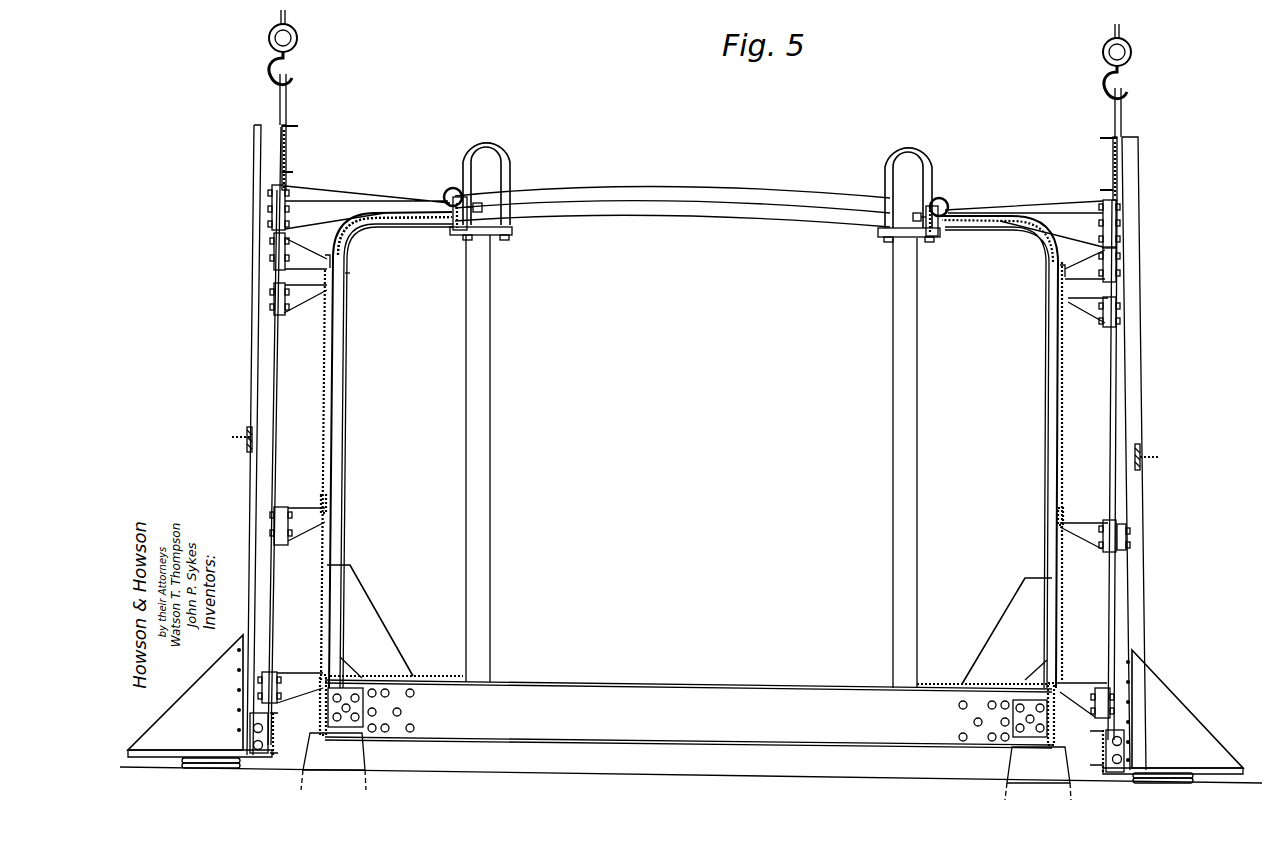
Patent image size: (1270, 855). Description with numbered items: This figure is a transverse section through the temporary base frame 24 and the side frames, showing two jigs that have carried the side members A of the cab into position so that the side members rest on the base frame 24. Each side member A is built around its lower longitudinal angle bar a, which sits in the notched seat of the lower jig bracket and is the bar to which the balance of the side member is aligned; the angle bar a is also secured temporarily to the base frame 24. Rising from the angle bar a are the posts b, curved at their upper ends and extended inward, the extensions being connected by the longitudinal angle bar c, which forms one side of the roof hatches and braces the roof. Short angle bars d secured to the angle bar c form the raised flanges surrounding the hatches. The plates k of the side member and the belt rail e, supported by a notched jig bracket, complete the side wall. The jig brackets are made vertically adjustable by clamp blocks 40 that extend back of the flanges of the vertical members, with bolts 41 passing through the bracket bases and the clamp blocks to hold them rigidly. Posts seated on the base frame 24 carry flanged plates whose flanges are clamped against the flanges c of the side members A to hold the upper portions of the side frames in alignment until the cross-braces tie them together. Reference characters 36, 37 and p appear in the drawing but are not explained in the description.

The temporary base frame 24 is at (725, 694).
The panel 36 is at (1001, 329).
The panel 37 is at (1001, 290).
The clamp block 40 is at (1120, 530).
The bolt 41 is at (1128, 545).
The side member A is at (345, 381).
The lower longitudinal angle bar a is at (341, 670).
The post b is at (413, 230).
The longitudinal angle bar c is at (453, 230).
The short angle bar d is at (448, 196).
The belt rail e is at (322, 497).
The plate k is at (323, 405).
The gusset plate p is at (437, 683).